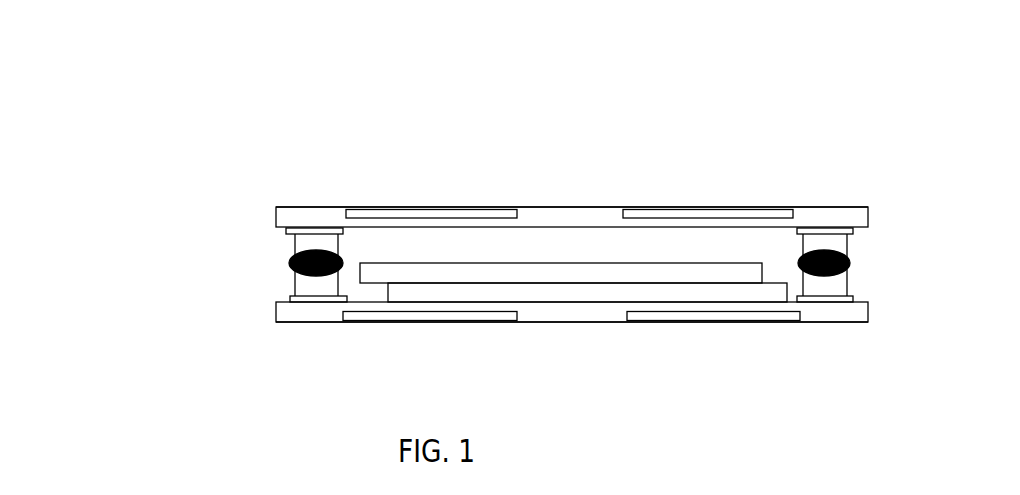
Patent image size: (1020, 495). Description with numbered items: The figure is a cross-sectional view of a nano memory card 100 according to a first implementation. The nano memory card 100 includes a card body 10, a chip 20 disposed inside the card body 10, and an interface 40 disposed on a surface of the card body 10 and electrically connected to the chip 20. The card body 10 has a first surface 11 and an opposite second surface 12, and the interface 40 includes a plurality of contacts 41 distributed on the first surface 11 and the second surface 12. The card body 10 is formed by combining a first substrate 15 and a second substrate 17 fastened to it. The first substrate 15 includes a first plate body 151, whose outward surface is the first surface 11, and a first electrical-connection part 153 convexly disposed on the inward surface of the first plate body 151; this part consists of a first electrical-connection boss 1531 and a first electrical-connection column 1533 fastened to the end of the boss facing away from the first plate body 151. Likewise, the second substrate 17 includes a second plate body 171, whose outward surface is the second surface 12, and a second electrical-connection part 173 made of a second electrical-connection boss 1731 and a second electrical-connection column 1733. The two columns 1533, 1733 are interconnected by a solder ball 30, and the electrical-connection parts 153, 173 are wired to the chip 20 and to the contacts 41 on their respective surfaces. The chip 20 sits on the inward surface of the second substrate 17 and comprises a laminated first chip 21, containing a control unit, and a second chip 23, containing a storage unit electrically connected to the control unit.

The nano memory card 100 is at (517, 88).
The card body 10 is at (64, 212).
The first surface 11 is at (550, 179).
The second surface 12 is at (510, 343).
The first substrate 15 is at (117, 195).
The first plate body 151 is at (505, 207).
The first electrical-connection part 153 is at (180, 223).
The first electrical-connection boss 1531 is at (525, 226).
The first electrical-connection column 1533 is at (522, 248).
The second substrate 17 is at (123, 283).
The second plate body 171 is at (501, 315).
The second electrical-connection part 173 is at (183, 270).
The second electrical-connection column 1733 is at (522, 279).
The second electrical-connection boss 1731 is at (525, 297).
The chip 20 is at (398, 343).
The first chip 21 is at (561, 309).
The second chip 23 is at (587, 336).
The solder ball 30 is at (316, 263).
The interface 40 is at (484, 193).
The contacts 41 is at (567, 185).